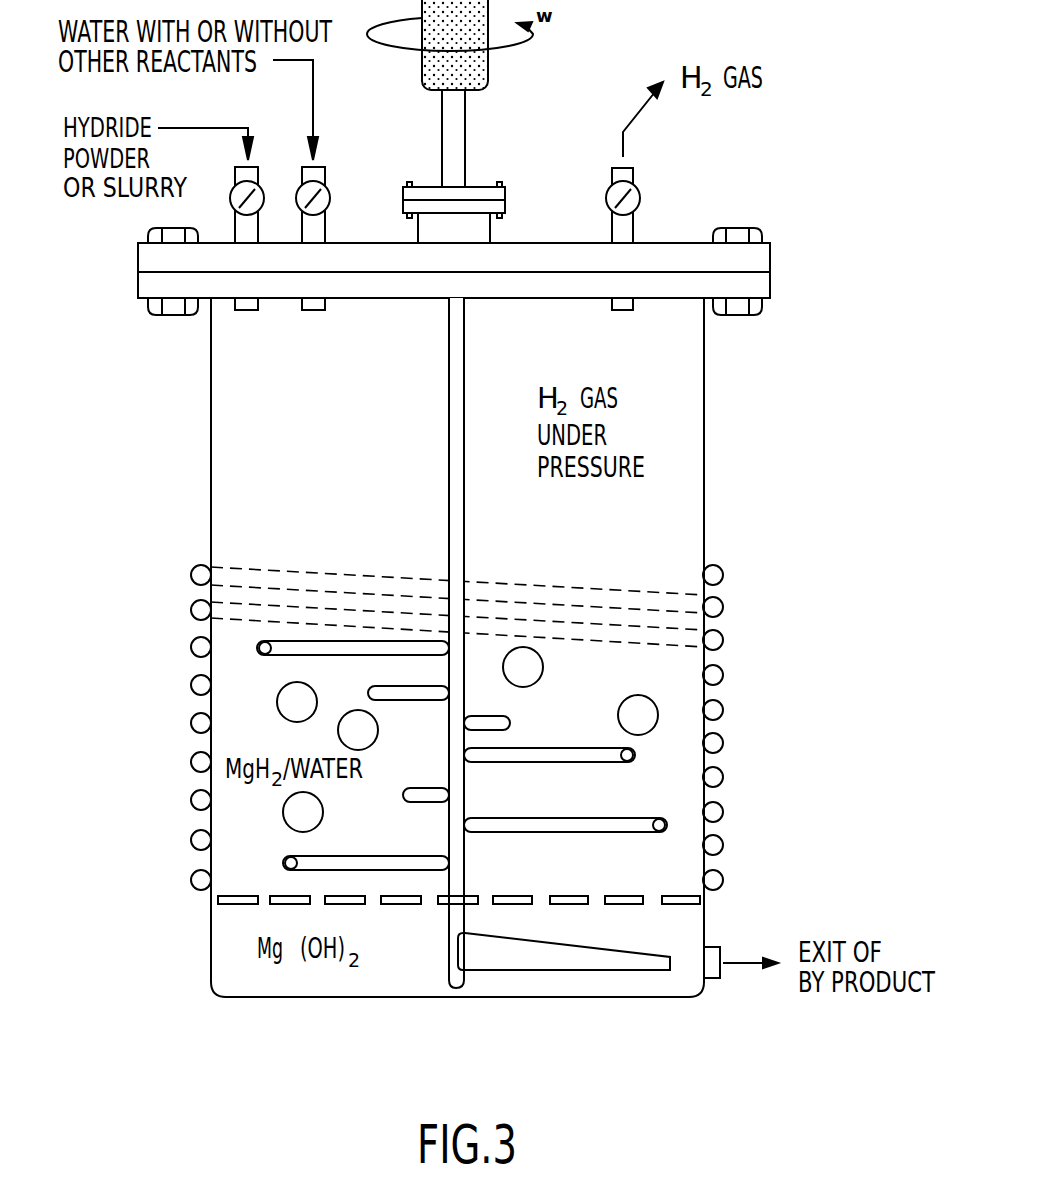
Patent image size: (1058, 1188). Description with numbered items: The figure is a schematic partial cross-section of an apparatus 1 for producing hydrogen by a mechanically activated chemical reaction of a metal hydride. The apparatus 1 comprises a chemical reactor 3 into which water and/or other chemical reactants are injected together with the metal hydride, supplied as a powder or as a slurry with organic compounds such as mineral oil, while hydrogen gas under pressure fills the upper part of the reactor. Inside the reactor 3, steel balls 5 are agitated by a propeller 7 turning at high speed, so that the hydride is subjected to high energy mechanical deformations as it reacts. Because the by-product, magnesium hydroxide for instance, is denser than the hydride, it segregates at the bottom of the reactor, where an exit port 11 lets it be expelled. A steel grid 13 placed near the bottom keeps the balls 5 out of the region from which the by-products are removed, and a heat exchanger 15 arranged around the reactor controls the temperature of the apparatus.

The apparatus 1 is at (753, 418).
The chemical reactor 3 is at (675, 522).
The steel balls 5 is at (317, 700).
The stirrer shaft 7 is at (458, 555).
The exit port 11 is at (717, 978).
The steel grid 13 is at (562, 895).
The heat exchanger 15 is at (723, 577).